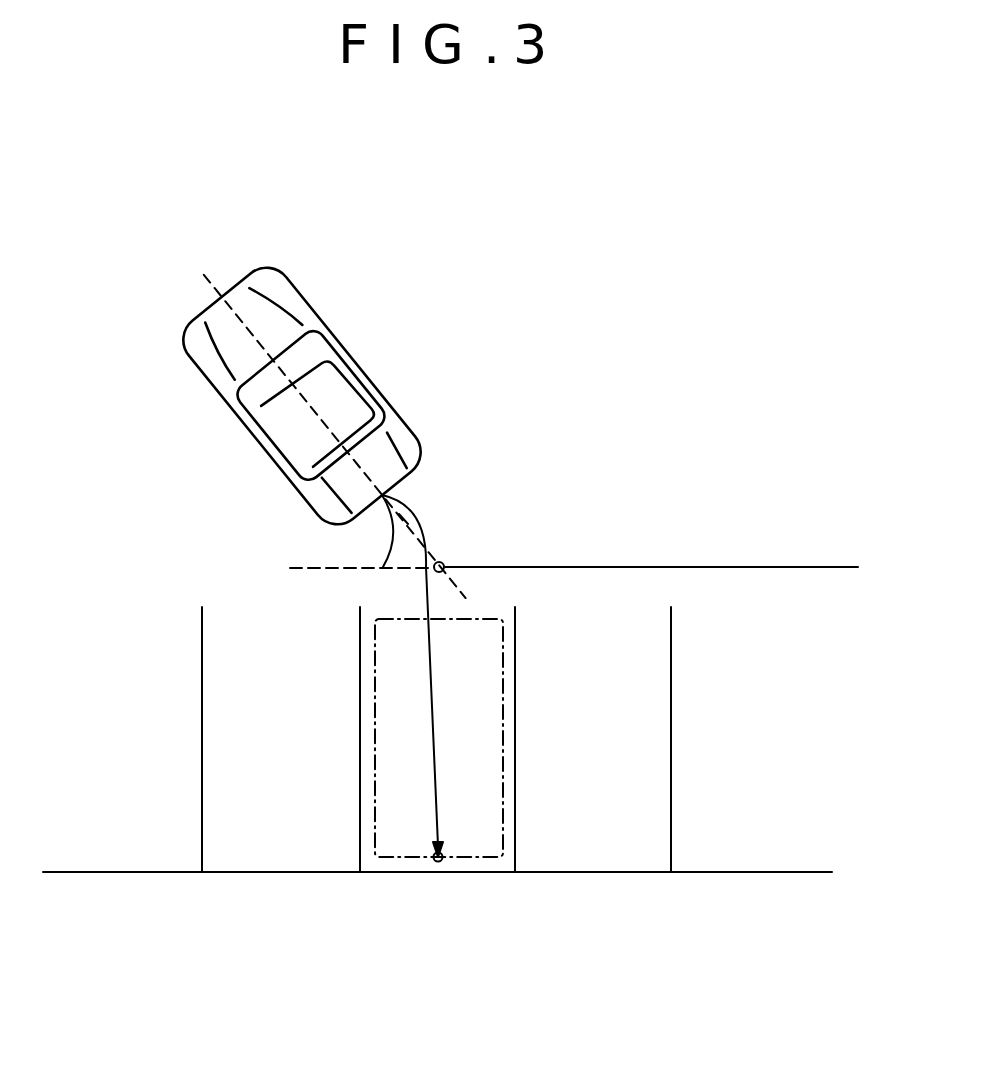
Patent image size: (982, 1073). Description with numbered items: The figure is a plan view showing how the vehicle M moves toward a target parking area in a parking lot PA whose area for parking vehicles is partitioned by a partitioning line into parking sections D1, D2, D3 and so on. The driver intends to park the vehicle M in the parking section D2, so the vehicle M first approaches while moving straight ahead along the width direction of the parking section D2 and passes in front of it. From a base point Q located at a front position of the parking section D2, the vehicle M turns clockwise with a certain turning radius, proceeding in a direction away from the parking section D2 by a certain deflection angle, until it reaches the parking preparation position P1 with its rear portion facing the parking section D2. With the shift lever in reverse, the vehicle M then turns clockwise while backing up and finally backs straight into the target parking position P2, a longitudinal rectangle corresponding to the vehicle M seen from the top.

The parking preparation position P1 is at (334, 548).
The vehicle M is at (261, 450).
The parking lot PA is at (723, 537).
The base point Q is at (444, 561).
The target parking position P2 is at (508, 723).
The parking section D1 is at (330, 873).
The parking section D2 is at (472, 873).
The parking section D3 is at (613, 873).